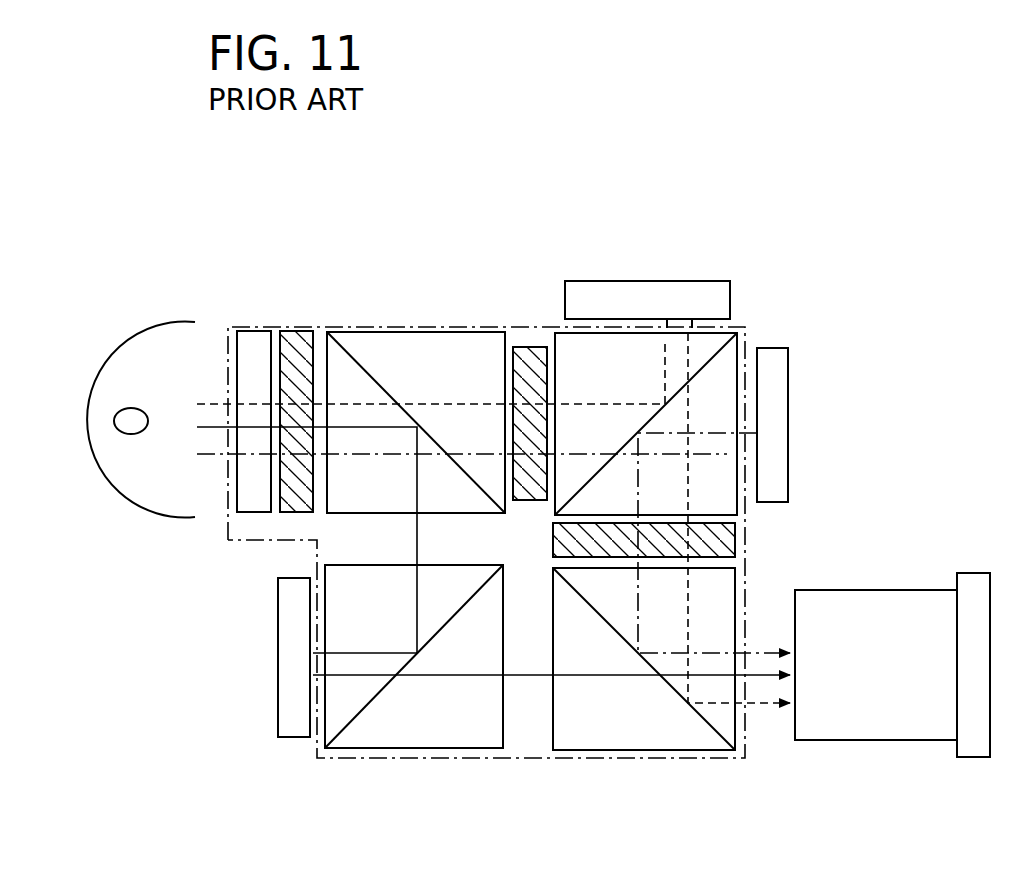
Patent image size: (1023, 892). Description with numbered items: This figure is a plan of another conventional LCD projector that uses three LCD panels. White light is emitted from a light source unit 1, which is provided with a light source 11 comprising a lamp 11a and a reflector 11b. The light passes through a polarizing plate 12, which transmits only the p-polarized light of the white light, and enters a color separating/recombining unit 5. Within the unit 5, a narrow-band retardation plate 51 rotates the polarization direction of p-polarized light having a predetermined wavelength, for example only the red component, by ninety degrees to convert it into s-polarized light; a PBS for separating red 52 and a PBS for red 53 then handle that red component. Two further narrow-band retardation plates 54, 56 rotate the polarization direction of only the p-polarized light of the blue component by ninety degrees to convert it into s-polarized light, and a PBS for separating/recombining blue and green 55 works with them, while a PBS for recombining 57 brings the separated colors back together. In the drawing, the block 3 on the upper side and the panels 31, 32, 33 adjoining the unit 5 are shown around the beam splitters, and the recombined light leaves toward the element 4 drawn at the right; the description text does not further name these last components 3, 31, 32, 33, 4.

The light source unit 1 is at (135, 498).
The light source 11 is at (87, 250).
The lamp 11a is at (130, 408).
The reflector 11b is at (152, 335).
The polarizing plate 12 is at (258, 350).
The color separating/recombining unit 5 is at (380, 326).
The narrow-band retardation plate 51 is at (302, 348).
The PBS for separating red 52 is at (437, 340).
The PBS for red 53 is at (425, 750).
The narrow-band retardation plate 54 is at (537, 347).
The PBS for separating/recombining blue and green 55 is at (745, 342).
The narrow-band retardation plate 56 is at (718, 540).
The PBS for recombining 57 is at (625, 752).
The light modulating unit 3 is at (615, 280).
The reflection type light valve 31 is at (290, 697).
The reflection type light valve 32 is at (712, 298).
The reflection type light valve 33 is at (773, 465).
The projection lens 4 is at (855, 722).